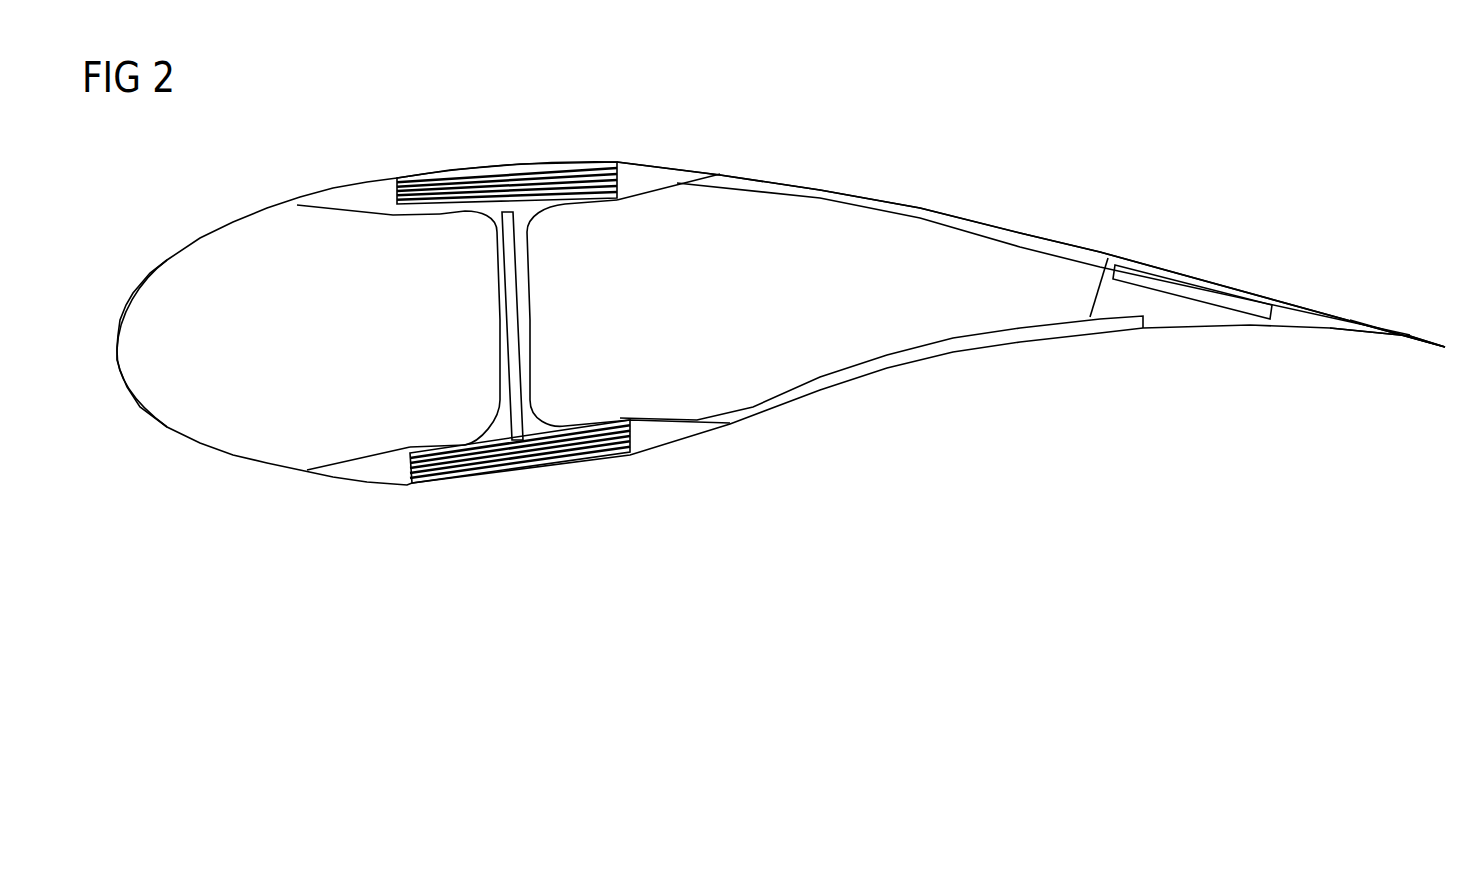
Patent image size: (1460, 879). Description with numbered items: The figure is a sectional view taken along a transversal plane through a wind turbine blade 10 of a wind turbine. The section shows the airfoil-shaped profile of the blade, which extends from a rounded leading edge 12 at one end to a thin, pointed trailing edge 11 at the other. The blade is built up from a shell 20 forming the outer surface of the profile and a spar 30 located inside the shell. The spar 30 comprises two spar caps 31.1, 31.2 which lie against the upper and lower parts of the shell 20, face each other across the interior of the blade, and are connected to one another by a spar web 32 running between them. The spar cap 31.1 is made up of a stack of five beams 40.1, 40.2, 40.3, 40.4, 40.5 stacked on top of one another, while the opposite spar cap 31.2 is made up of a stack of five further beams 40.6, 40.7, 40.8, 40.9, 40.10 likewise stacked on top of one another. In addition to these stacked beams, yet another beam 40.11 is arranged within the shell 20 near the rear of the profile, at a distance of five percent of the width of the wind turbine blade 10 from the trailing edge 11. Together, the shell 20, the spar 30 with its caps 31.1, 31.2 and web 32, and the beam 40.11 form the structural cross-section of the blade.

The wind turbine blade 10 is at (980, 392).
The trailing edge 11 is at (1413, 325).
The leading edge 12 is at (108, 357).
The shell 20 is at (948, 216).
The spar 30 is at (407, 168).
The spar cap 31.1 is at (577, 194).
The spar cap 31.2 is at (432, 452).
The spar web 32 is at (500, 322).
The beam 40.1 is at (445, 172).
The beam 40.2 is at (477, 177).
The beam 40.3 is at (520, 179).
The beam 40.4 is at (556, 184).
The beam 40.5 is at (598, 191).
The beam 40.6 is at (445, 482).
The beam 40.7 is at (472, 485).
The beam 40.8 is at (519, 476).
The beam 40.9 is at (549, 473).
The beam 40.10 is at (591, 463).
The beam 40.11 is at (1187, 290).